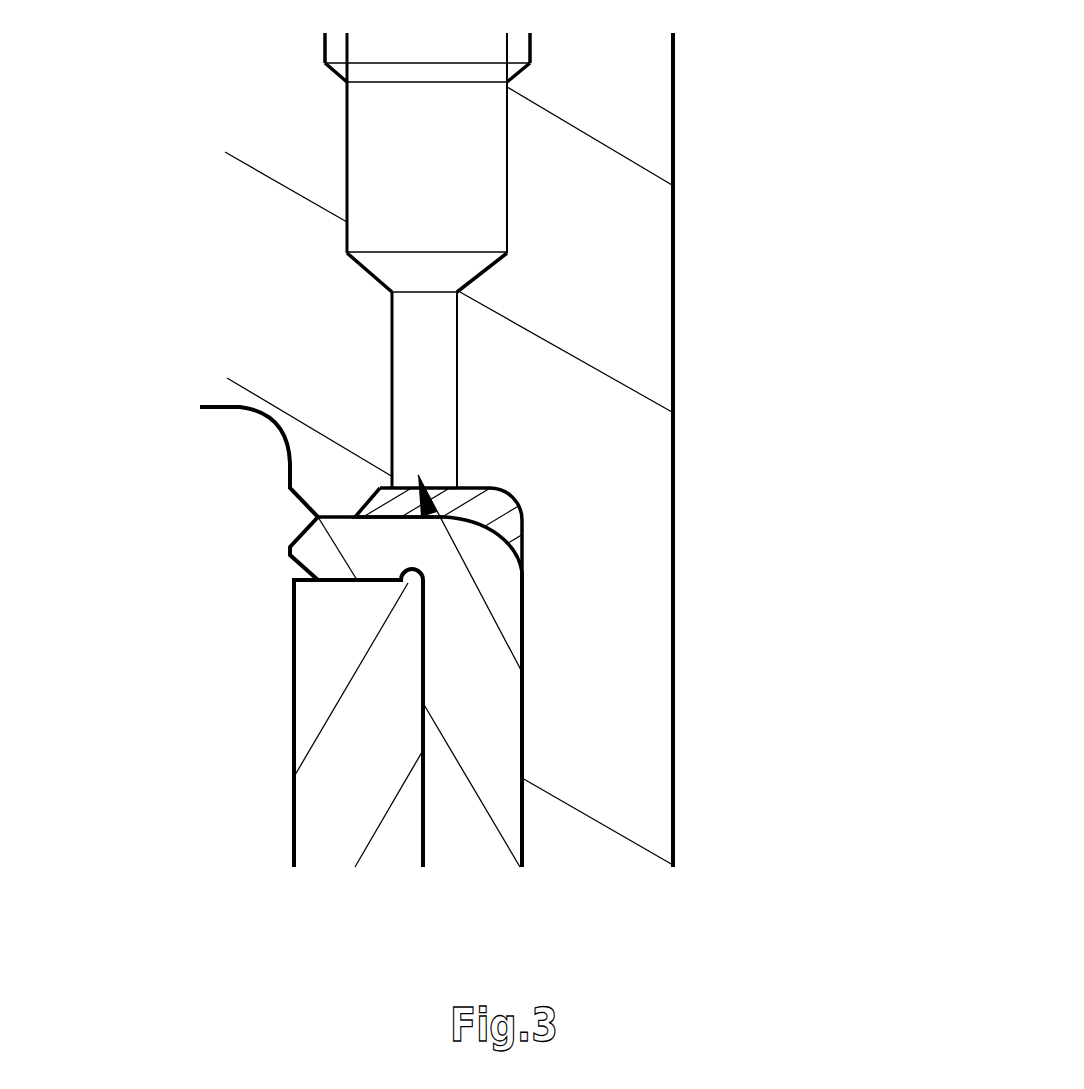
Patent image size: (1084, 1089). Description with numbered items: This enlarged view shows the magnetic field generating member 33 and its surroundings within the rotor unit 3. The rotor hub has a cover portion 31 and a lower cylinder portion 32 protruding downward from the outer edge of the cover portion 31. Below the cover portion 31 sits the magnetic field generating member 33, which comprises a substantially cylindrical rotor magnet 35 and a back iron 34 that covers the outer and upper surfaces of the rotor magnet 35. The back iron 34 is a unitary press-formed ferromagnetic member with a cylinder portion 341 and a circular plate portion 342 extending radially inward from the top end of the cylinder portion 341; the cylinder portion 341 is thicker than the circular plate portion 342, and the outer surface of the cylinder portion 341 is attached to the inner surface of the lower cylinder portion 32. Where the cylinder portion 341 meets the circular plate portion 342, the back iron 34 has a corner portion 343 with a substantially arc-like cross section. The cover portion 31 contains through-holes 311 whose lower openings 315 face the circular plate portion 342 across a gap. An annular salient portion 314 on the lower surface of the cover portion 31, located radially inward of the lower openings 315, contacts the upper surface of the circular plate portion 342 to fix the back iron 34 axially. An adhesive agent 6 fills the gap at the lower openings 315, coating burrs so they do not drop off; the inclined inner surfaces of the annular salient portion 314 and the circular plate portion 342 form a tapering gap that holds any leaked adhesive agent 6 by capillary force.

The rotor unit 3 is at (840, 146).
The cover portion 31 is at (732, 213).
The through-holes 311 is at (427, 372).
The annular salient portion 314 is at (333, 505).
The lower openings 315 is at (440, 517).
The lower cylinder portion 32 is at (600, 800).
The magnetic field generating member 33 is at (168, 742).
The back iron 34 is at (805, 745).
The cylinder portion 341 is at (480, 673).
The circular plate portion 342 is at (380, 543).
The corner portion 343 is at (483, 550).
The rotor magnet 35 is at (358, 760).
The adhesive agent 6 is at (480, 507).